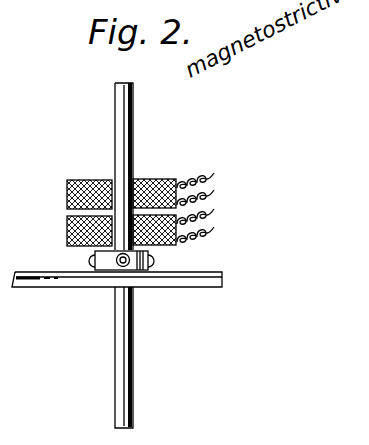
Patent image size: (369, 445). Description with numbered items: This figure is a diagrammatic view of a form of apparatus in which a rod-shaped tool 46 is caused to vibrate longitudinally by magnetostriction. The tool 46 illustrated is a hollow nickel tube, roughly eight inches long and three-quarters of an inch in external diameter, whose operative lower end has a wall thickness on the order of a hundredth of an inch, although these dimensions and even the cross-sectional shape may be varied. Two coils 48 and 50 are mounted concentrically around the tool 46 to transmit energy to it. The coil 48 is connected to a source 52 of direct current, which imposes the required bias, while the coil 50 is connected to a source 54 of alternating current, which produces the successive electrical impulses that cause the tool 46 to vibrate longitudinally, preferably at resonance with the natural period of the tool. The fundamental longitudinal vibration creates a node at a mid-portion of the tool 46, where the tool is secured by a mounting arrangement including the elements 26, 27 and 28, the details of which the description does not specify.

The rod-shaped tool 46 is at (115, 378).
The coil 48 is at (67, 195).
The coil 50 is at (67, 232).
The source of direct current 52 is at (205, 183).
The source of alternating current 54 is at (204, 221).
The mounting plate 28 is at (55, 287).
The pivot bracket 26 is at (118, 271).
The clamp 27 is at (135, 271).